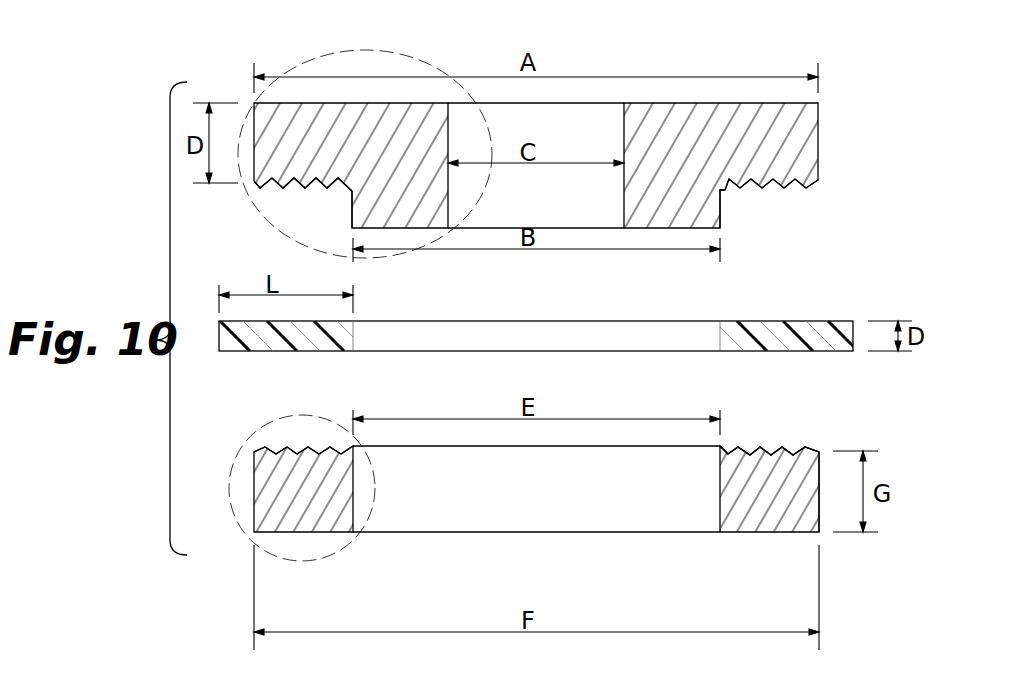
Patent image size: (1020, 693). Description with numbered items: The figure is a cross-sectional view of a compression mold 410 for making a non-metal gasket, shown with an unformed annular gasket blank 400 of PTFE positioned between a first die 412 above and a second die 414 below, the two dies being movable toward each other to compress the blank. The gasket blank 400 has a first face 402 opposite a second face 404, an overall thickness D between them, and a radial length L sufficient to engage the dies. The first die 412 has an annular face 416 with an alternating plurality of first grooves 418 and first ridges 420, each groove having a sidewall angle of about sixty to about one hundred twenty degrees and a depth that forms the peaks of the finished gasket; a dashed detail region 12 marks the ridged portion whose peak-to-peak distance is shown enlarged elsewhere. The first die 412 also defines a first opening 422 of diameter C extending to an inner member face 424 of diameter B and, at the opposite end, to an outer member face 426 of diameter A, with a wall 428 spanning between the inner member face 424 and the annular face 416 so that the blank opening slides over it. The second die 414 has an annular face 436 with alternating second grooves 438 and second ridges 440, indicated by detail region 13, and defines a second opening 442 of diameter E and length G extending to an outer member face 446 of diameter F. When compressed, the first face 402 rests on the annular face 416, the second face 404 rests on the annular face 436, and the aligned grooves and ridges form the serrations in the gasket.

The detail region of FIG. 12 is at (315, 60).
The detail region of FIG. 13 is at (252, 540).
The annular gasket blank 400 is at (475, 337).
The first face 402 is at (221, 337).
The second face 404 is at (303, 345).
The compression mold 410 is at (542, 158).
The first die 412 is at (714, 105).
The second die 414 is at (752, 524).
The annular face 416 is at (756, 190).
The first grooves 418 is at (793, 188).
The first ridges 420 is at (281, 191).
The first opening 422 is at (586, 125).
The inner member face 424 is at (656, 228).
The outer member face 426 is at (367, 103).
The wall 428 is at (351, 215).
The annular face 436 is at (775, 447).
The second grooves 438 is at (748, 447).
The second ridges 440 is at (300, 447).
The second opening 442 is at (536, 496).
The outer member face 446 is at (308, 520).